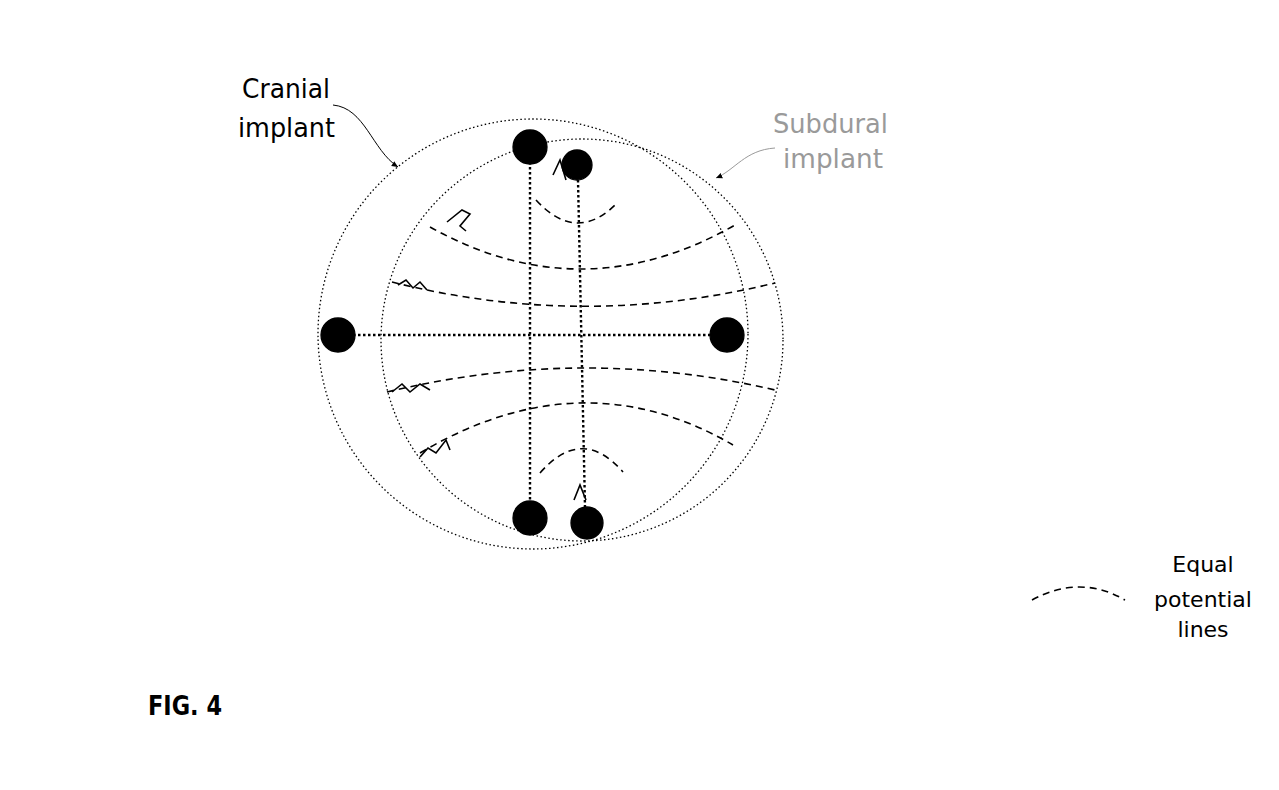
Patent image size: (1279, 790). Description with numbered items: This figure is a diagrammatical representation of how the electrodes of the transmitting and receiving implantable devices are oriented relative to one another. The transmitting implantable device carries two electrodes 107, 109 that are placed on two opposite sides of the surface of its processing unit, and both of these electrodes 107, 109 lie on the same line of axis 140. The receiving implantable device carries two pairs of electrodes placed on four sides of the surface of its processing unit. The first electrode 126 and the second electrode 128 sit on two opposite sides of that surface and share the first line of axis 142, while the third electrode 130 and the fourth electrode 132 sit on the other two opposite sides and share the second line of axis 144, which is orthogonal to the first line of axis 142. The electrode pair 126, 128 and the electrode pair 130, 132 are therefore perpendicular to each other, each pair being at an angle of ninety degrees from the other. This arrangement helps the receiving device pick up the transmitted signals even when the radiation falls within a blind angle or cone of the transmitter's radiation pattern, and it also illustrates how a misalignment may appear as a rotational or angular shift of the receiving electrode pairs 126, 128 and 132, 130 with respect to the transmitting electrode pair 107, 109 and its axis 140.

The electrode 107 is at (590, 147).
The electrode 109 is at (607, 528).
The first electrode 126 is at (522, 126).
The second electrode 128 is at (506, 527).
The third electrode 130 is at (338, 314).
The fourth electrode 132 is at (737, 309).
The line of axis 140 is at (594, 432).
The first line of axis 142 is at (525, 400).
The second line of axis 144 is at (418, 329).